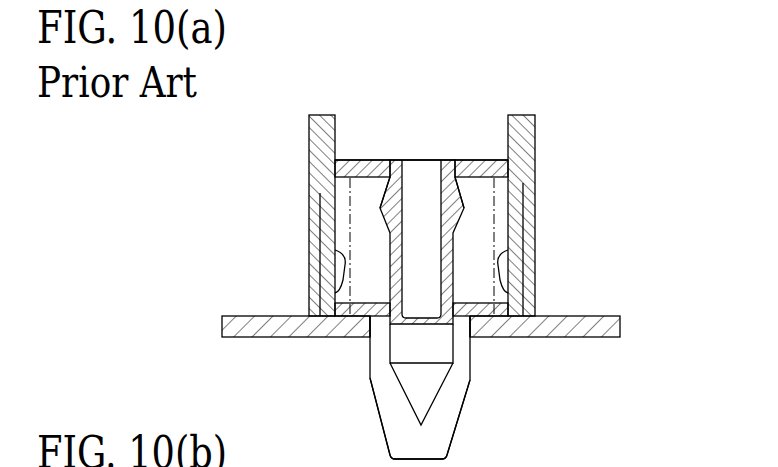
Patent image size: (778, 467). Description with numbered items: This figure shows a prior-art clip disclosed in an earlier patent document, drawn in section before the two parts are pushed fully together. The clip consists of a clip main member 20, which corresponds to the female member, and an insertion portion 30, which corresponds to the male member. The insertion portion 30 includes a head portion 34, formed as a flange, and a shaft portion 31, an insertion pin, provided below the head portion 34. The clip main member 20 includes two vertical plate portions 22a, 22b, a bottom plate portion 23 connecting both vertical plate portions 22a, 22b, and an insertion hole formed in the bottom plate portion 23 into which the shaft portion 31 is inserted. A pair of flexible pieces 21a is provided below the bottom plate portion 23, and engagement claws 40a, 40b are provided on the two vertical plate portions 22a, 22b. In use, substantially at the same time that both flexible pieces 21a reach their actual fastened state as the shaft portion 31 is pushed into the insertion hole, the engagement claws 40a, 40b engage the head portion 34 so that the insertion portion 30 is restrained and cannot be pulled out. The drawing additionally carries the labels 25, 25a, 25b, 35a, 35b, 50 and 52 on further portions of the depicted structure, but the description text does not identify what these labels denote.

The clip main member 20 is at (415, 291).
The flexible pieces 21a is at (458, 413).
The vertical plate portion 22a is at (310, 147).
The vertical plate portion 22b is at (537, 171).
The bottom plate portion 23 is at (535, 284).
The leg tip portion 25 is at (295, 408).
The outer inclined surface of leg 25a is at (368, 380).
The inner inclined surface of leg 25b is at (405, 398).
The insertion portion 30 is at (424, 152).
The shaft portion 31 is at (322, 340).
The head portion 34 is at (483, 160).
The left shoulder of pin 35a is at (380, 208).
The right shoulder of pin 35b is at (464, 207).
The engagement claw 40a is at (335, 252).
The engagement claw 40b is at (535, 236).
The panel 50 is at (602, 315).
The leg inserted through panel 52 is at (472, 347).